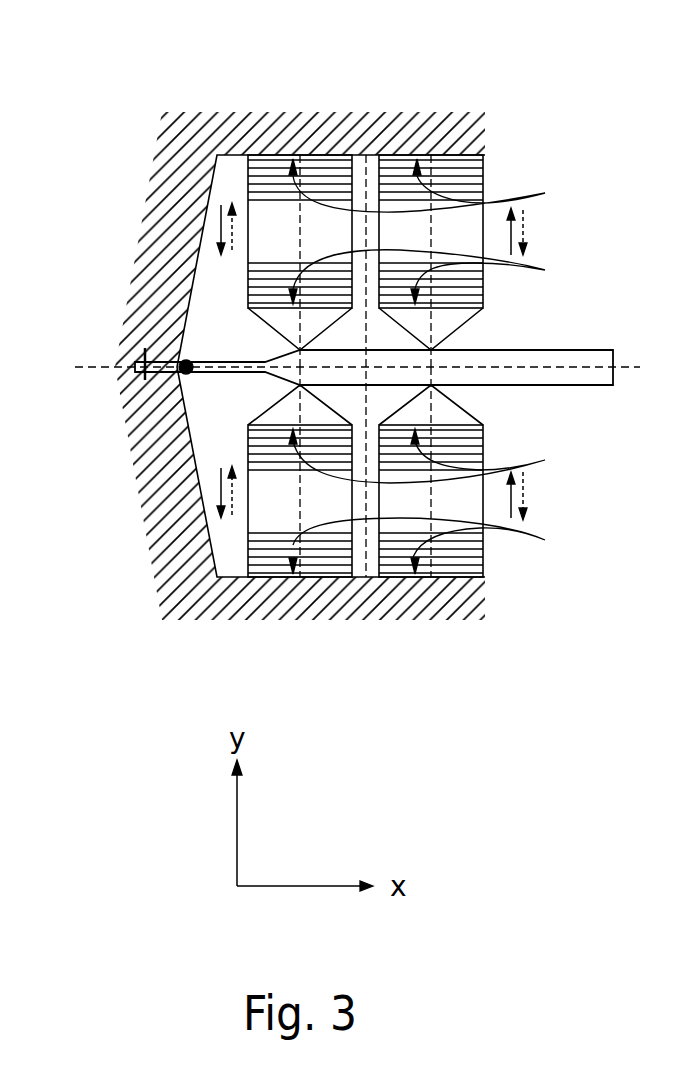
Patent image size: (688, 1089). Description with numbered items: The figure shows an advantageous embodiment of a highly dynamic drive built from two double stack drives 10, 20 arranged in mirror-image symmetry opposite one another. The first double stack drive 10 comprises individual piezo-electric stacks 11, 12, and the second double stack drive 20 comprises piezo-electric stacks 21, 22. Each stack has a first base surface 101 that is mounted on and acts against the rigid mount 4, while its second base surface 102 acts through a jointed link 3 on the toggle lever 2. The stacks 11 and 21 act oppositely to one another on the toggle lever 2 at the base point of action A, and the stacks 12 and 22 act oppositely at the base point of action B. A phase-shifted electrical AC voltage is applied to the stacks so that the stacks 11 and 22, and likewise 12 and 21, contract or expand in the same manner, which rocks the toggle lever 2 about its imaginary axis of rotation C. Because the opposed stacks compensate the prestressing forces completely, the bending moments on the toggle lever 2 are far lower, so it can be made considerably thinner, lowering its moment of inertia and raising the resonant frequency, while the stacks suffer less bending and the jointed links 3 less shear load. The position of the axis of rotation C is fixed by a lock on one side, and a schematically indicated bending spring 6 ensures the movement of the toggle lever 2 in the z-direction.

The toggle lever 2 is at (590, 360).
The jointed links 3 is at (433, 410).
The rigid mount 4 is at (137, 353).
The bending spring 6 is at (163, 378).
The double stack drive 10 is at (402, 222).
The piezo-electric stack 11 is at (313, 245).
The piezo-electric stack 12 is at (446, 245).
The second double stack drive 20 is at (410, 527).
The piezo-electric stack 21 is at (312, 513).
The piezo-electric stack 22 is at (447, 513).
The first base surfaces 101 is at (418, 366).
The second base surfaces 102 is at (418, 366).
The base point of action A is at (297, 349).
The base point of action B is at (431, 385).
The axis of rotation C is at (366, 367).